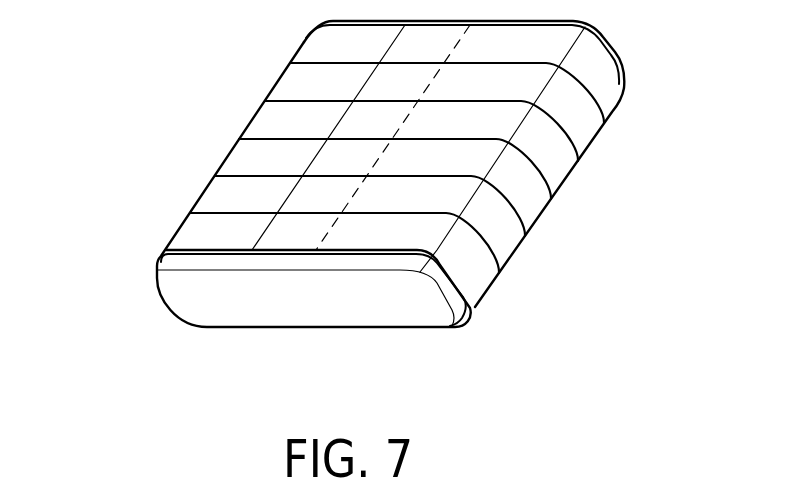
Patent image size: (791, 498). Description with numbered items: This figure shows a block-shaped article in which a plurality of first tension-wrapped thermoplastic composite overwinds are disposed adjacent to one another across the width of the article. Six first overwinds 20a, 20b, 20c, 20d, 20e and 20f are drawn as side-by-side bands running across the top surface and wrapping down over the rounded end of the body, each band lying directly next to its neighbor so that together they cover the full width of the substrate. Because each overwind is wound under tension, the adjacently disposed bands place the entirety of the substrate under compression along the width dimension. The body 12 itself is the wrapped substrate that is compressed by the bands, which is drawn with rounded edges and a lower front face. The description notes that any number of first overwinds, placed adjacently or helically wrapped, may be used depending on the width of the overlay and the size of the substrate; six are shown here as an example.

The pillow / cushion body 12 is at (408, 320).
The first overwind 20a is at (198, 237).
The first overwind 20b is at (218, 202).
The first overwind 20c is at (243, 167).
The first overwind 20d is at (268, 130).
The first overwind 20e is at (293, 93).
The first overwind 20f is at (320, 55).